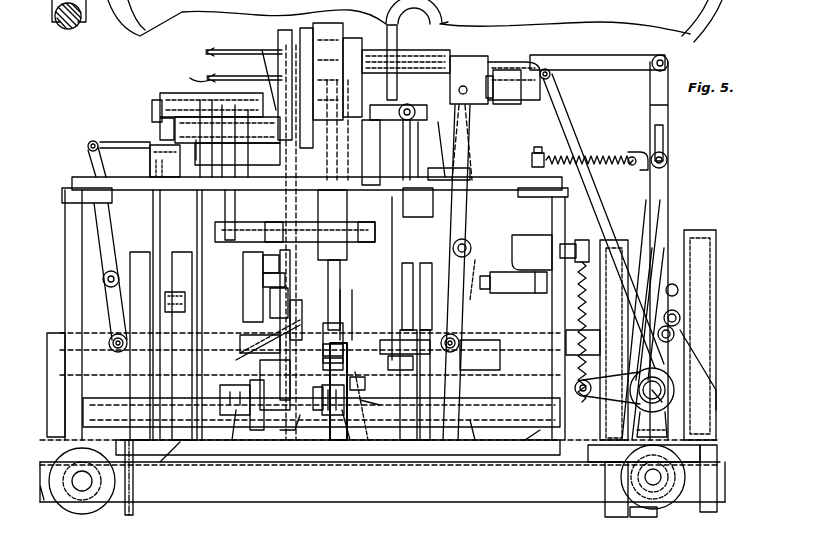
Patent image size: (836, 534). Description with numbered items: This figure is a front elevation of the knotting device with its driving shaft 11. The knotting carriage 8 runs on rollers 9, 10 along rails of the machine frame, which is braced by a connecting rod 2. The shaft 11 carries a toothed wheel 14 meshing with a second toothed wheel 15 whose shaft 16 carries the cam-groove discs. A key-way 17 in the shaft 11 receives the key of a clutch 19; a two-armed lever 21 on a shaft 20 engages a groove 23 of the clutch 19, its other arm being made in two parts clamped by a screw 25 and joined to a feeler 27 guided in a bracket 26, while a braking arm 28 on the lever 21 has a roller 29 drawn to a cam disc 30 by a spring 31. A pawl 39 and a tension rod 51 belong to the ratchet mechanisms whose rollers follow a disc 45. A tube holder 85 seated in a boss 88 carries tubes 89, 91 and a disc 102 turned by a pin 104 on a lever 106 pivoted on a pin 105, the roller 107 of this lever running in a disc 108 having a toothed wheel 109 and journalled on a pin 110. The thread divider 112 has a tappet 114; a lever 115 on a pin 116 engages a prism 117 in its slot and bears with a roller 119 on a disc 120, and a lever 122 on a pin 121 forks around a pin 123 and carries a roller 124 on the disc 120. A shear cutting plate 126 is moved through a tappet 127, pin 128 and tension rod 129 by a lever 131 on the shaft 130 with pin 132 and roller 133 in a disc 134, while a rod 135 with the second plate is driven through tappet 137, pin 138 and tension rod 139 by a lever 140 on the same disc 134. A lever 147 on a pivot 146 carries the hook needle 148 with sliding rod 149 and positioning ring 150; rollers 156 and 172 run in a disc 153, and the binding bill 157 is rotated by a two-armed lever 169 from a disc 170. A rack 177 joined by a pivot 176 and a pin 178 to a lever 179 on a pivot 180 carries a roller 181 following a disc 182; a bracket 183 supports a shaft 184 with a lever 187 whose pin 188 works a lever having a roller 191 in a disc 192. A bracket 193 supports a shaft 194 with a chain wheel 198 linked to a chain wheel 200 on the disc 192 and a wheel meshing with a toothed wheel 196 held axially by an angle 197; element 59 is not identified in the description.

The connecting rod 2 is at (80, 26).
The knotting carriage 8 is at (72, 178).
The roller 9 is at (667, 507).
The roller 10 is at (66, 456).
The driving shaft 11 is at (183, 495).
The toothed wheel 14 is at (612, 500).
The second toothed wheel 15 is at (612, 240).
The shaft 16 is at (700, 300).
The key-way 17 is at (306, 440).
The clutch 19 is at (710, 506).
The shaft 20 is at (662, 398).
The two-armed lever 21 is at (650, 104).
The groove 23 is at (648, 514).
The screw 25 is at (668, 158).
The bracket 26 is at (444, 140).
The feeler 27 is at (600, 55).
The braking arm 28 is at (676, 290).
The roller 29 is at (658, 248).
The cam disc 30 is at (622, 224).
The spring 31 is at (604, 160).
The pawl 39 is at (627, 346).
The disc 45 is at (696, 232).
The tension rod 51 is at (612, 208).
The cover 59 is at (444, 30).
The tube holder 85 is at (356, 38).
The boss 88 is at (372, 134).
The tube 89 is at (228, 48).
The tube 91 is at (192, 74).
The disc 102 is at (387, 44).
The pin 104 is at (412, 106).
The pin 105 is at (376, 185).
The lever 106 is at (394, 232).
The roller 107 is at (430, 362).
The disc 108 is at (418, 254).
The toothed wheel 109 is at (430, 432).
The pin 110 is at (478, 320).
The thread divider 112 is at (302, 231).
The tappet 114 is at (518, 48).
The lever 115 is at (474, 136).
The pin 116 is at (468, 240).
The prism 117 is at (462, 86).
The roller 119 is at (460, 346).
The disc 120 is at (476, 430).
The pin 121 is at (478, 264).
The lever 122 is at (528, 214).
The pin 123 is at (521, 92).
The roller 124 is at (482, 370).
The shear cutting plate 126 is at (300, 38).
The tappet 127 is at (352, 298).
The pin 128 is at (352, 258).
The tension rod 129 is at (345, 336).
The shaft 130 is at (524, 430).
The lever 131 is at (400, 432).
The pin 132 is at (355, 375).
The roller 133 is at (372, 416).
The disc 134 is at (364, 450).
The rod 135 is at (334, 148).
The tappet 137 is at (346, 344).
The pin 138 is at (346, 358).
The tension rod 139 is at (338, 420).
The lever 140 is at (342, 430).
The pivot 146 is at (270, 224).
The lever 147 is at (304, 405).
The hook needle 148 is at (244, 70).
The rod 149 is at (263, 278).
The positioning ring 150 is at (240, 342).
The disc 153 is at (290, 316).
The roller 156 is at (270, 294).
The binding bill 157 is at (253, 345).
The two-armed lever 169 is at (236, 416).
The disc 170 is at (236, 440).
The roller 172 is at (243, 258).
The pivot 176 is at (255, 73).
The rack 177 is at (106, 150).
The pin 178 is at (88, 144).
The lever 179 is at (100, 218).
The pivot 180 is at (103, 278).
The roller 181 is at (104, 343).
The disc 182 is at (126, 440).
The bracket 183 is at (195, 93).
The shaft 184 is at (160, 120).
The lever 187 is at (172, 130).
The pin 188 is at (150, 164).
The roller 191 is at (172, 292).
The disc 192 is at (160, 462).
The bracket 193 is at (258, 157).
The shaft 194 is at (156, 100).
The toothed wheel 196 is at (280, 30).
The angle 197 is at (328, 26).
The chain wheel 198 is at (205, 103).
The chain wheel 200 is at (225, 368).